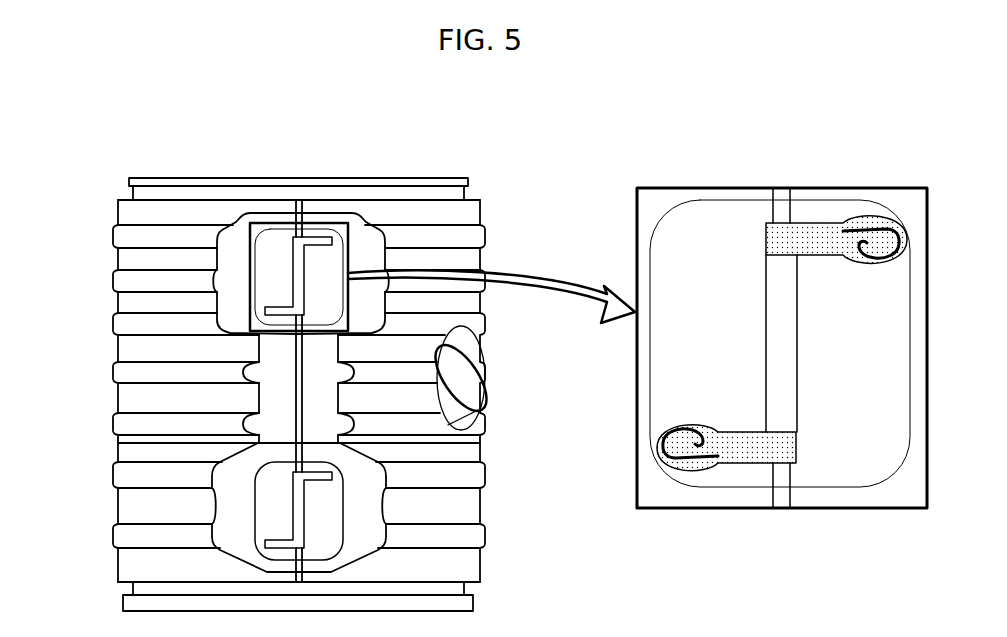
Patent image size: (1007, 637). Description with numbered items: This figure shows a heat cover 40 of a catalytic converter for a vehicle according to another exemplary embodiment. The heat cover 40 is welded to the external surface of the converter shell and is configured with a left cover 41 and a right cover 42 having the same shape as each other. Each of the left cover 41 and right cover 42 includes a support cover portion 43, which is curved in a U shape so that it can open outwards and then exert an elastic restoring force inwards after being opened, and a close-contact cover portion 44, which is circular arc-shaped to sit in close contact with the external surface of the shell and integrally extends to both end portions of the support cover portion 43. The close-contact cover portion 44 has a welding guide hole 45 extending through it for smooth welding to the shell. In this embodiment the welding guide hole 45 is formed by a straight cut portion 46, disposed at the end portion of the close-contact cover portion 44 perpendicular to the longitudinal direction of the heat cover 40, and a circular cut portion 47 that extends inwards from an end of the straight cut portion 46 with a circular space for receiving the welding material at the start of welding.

The heat cover 40 is at (316, 112).
The left cover 41 is at (230, 212).
The right cover 42 is at (368, 212).
The support cover portion 43 is at (117, 446).
The close-contact cover portion 44 is at (262, 262).
The welding guide hole 45 is at (282, 310).
The straight cut portion 46 is at (817, 225).
The circular cut portion 47 is at (912, 240).